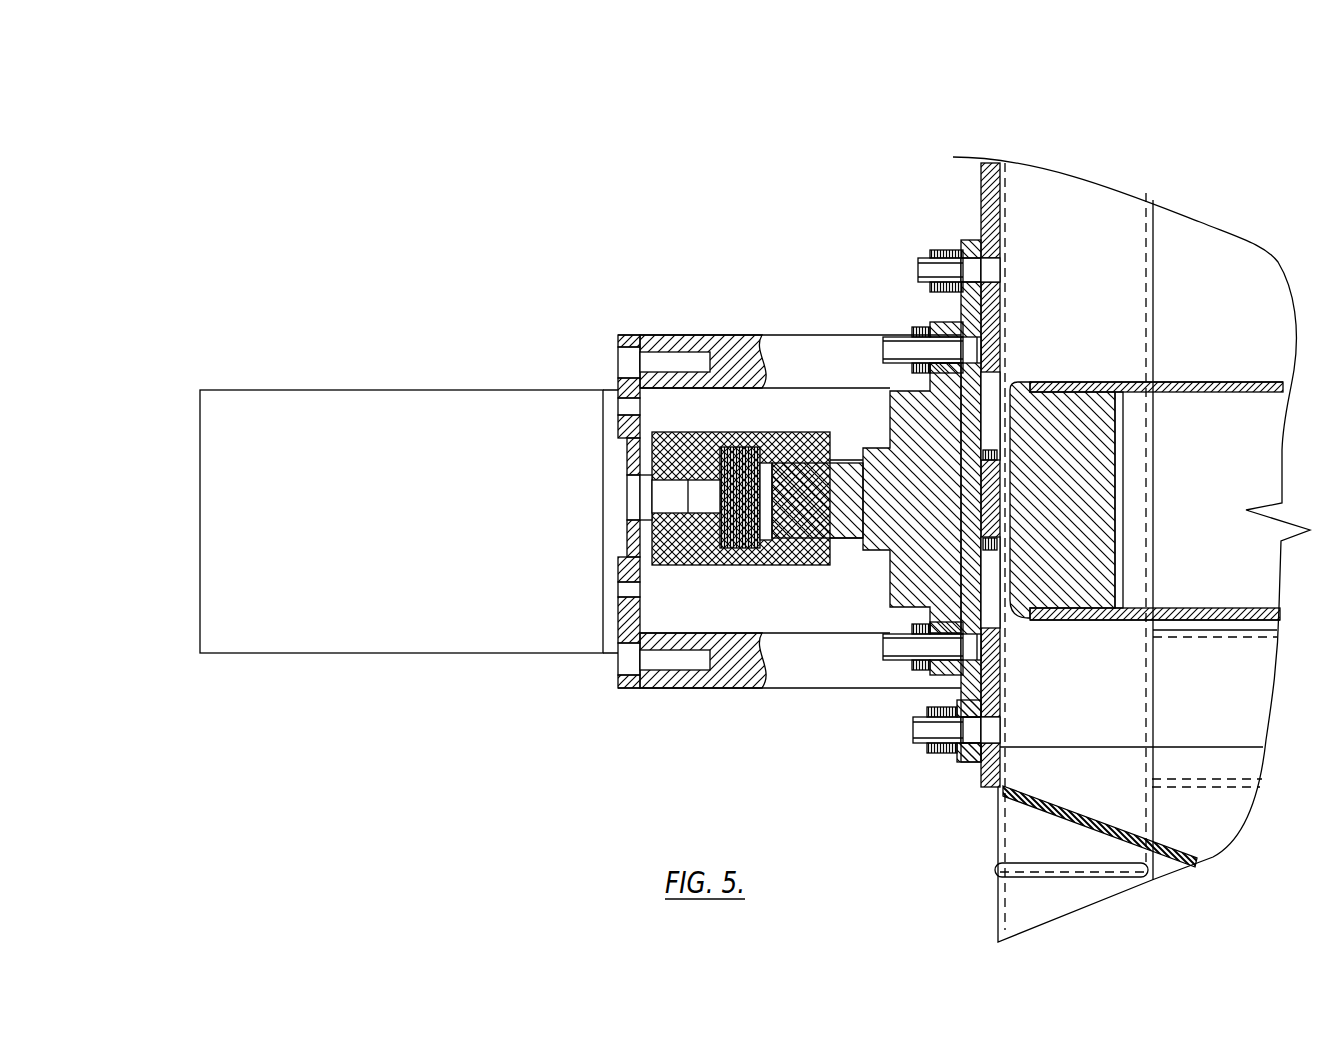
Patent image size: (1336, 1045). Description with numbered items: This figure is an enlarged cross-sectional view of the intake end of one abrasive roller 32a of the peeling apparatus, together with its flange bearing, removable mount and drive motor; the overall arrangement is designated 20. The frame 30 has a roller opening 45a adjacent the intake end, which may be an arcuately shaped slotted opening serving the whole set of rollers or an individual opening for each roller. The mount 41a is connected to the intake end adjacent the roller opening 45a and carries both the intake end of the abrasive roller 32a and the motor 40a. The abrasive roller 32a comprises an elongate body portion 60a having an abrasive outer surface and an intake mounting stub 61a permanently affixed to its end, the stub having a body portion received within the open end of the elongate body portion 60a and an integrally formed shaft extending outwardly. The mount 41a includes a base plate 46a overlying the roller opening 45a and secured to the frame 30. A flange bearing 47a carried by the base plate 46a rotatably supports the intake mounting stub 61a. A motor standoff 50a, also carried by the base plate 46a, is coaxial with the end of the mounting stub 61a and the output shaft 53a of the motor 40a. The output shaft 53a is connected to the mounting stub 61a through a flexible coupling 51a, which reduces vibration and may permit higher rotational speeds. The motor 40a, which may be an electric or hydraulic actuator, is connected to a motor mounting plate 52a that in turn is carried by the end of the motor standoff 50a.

The roller drive assembly 20 is at (378, 219).
The frame 30 is at (1104, 519).
The abrasive roller 32a is at (1233, 378).
The motor 40a is at (242, 653).
The mount 41a is at (703, 302).
The roller opening 45a is at (990, 397).
The base plate 46a is at (961, 310).
The flange bearing 47a is at (907, 580).
The motor standoff 50a is at (733, 673).
The flexible coupling 51a is at (778, 432).
The motor mounting plate 52a is at (625, 632).
The output shaft 53a is at (663, 493).
The elongate body portion 60a is at (1173, 382).
The intake mounting stub 61a is at (1057, 420).